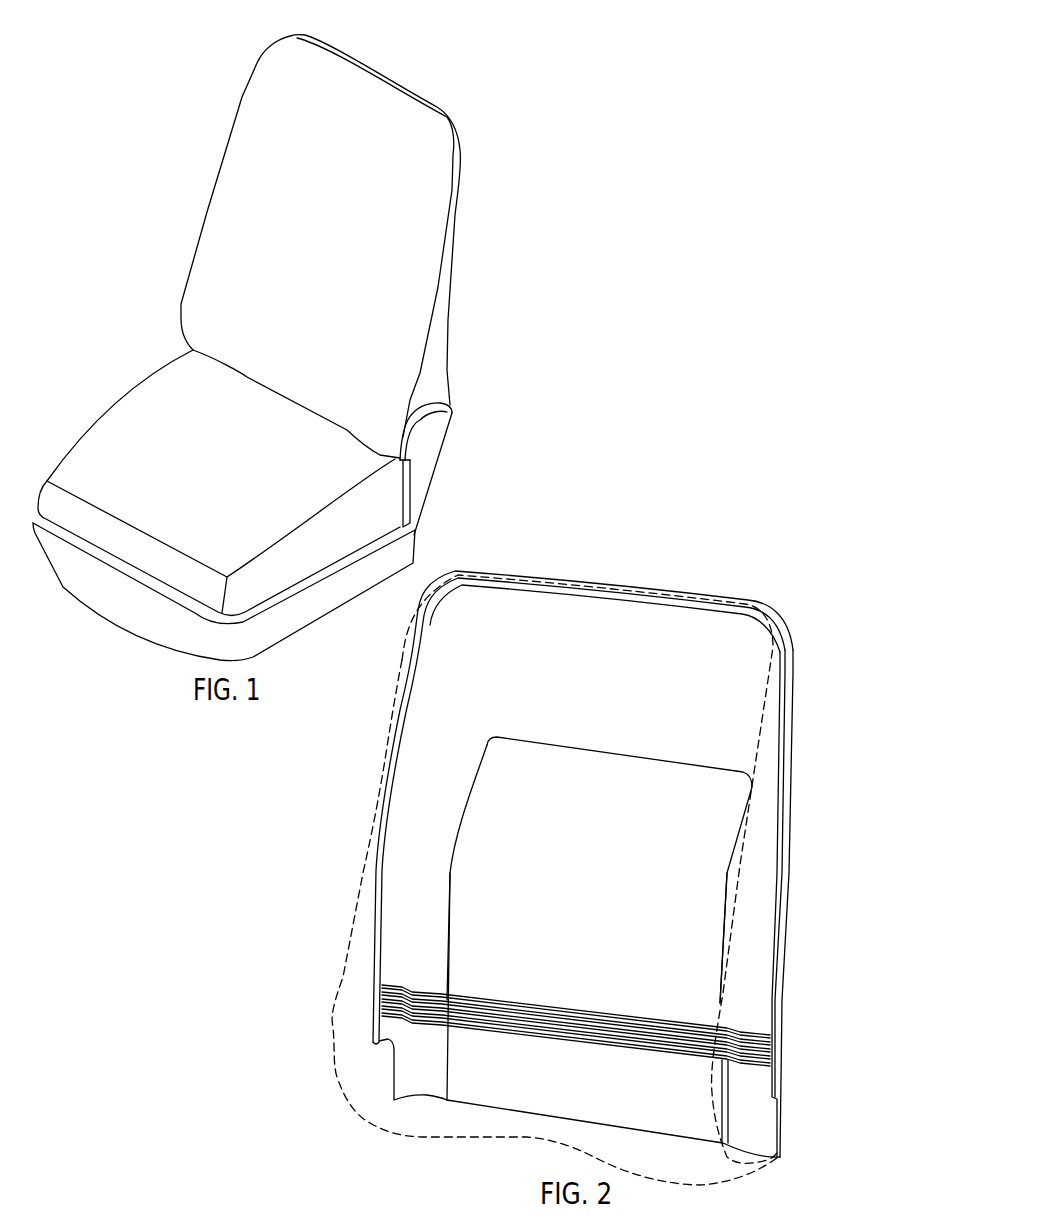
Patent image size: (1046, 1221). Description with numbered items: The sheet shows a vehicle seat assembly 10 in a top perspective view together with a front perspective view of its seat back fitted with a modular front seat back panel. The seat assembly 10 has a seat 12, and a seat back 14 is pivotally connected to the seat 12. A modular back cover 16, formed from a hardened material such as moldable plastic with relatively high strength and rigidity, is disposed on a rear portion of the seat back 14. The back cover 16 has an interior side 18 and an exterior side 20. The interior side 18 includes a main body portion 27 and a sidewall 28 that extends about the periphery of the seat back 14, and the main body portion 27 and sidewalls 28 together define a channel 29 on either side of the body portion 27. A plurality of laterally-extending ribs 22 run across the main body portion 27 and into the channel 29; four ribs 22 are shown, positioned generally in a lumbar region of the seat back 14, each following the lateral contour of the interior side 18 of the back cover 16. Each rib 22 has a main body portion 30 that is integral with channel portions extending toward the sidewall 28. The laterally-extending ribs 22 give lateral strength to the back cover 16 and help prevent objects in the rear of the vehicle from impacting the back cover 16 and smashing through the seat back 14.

In FIG. 1, the seat assembly 10 is at (147, 147).
In FIG. 1, the seat 12 is at (227, 471).
In FIG. 1, the seat back 14 is at (351, 228).
In FIG. 2, the seat back 14 is at (360, 980).
In FIG. 2, the back cover 16 is at (767, 610).
In FIG. 2, the interior side 18 is at (645, 705).
In FIG. 2, the exterior side 20 is at (797, 770).
In FIG. 2, the laterally-extending ribs 22 is at (612, 1005).
In FIG. 2, the main body portion 27 is at (602, 895).
In FIG. 2, the sidewall 28 is at (782, 862).
In FIG. 2, the channel 29 is at (442, 859).
In FIG. 2, the main body portion of rib 30 is at (507, 1023).